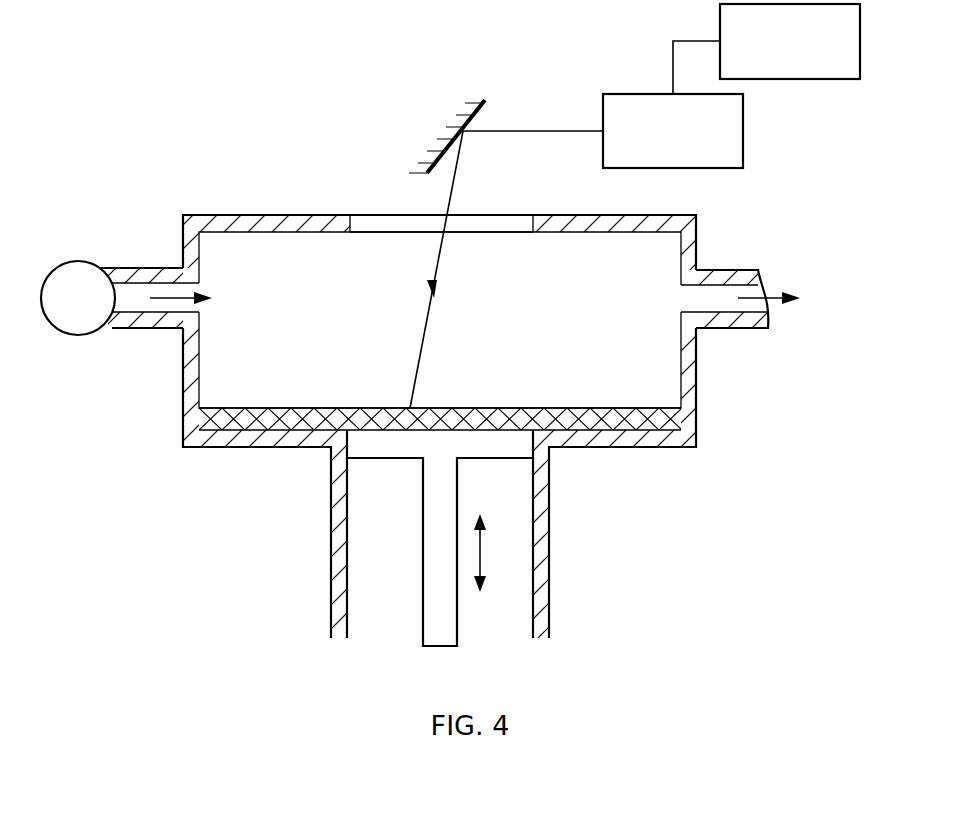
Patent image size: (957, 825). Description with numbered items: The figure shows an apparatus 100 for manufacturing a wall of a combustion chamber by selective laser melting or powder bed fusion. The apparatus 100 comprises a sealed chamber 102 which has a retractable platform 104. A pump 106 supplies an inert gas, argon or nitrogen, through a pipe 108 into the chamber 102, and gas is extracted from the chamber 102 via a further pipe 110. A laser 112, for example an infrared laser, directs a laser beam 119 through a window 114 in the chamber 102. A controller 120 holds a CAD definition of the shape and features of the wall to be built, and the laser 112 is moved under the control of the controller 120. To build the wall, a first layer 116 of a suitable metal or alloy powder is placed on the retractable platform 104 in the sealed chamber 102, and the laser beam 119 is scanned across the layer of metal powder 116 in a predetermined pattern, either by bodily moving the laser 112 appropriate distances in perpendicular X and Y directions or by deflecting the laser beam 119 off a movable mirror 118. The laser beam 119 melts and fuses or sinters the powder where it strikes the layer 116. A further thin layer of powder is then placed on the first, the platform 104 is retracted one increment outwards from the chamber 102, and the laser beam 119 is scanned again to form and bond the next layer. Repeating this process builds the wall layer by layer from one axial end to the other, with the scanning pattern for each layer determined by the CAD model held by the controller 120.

The apparatus 100 is at (420, 401).
The sealed chamber 102 is at (690, 242).
The retractable platform 104 is at (397, 450).
The pump 106 is at (85, 273).
The pipe 108 is at (143, 318).
The pipe 110 is at (725, 320).
The laser 112 is at (647, 145).
The window 114 is at (380, 222).
The layer of metal powder 116 is at (270, 425).
The movable mirror 118 is at (460, 120).
The laser beam 119 is at (530, 131).
The controller 120 is at (765, 57).